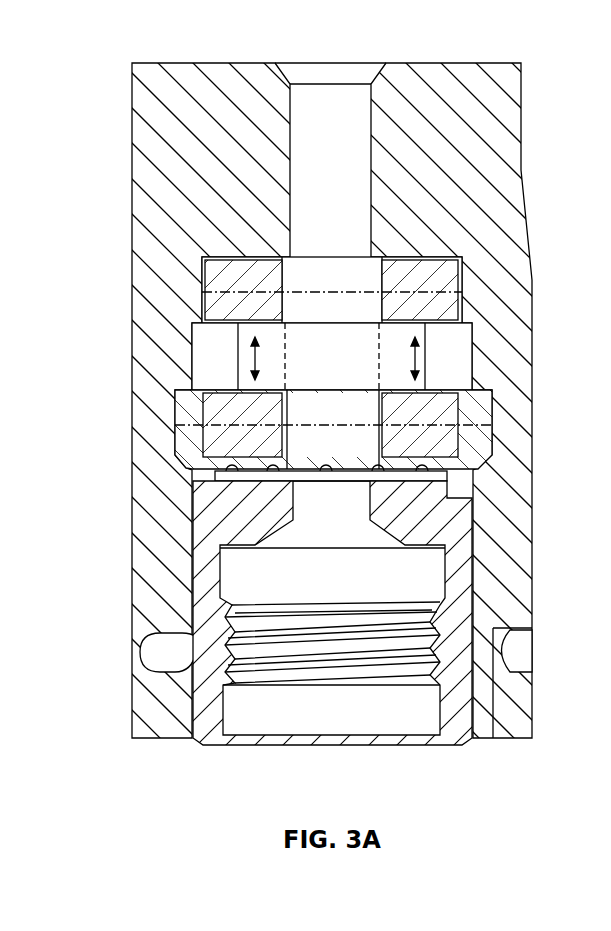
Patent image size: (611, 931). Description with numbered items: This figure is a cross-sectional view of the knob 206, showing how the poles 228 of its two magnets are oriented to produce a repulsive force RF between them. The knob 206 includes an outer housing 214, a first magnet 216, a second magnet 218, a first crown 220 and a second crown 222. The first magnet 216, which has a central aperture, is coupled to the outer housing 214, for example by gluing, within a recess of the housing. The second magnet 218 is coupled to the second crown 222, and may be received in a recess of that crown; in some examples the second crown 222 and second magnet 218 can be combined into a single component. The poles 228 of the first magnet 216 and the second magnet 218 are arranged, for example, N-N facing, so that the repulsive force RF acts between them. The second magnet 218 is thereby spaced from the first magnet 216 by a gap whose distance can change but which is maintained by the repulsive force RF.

The knob 206 is at (100, 47).
The outer housing 214 is at (137, 505).
The first magnet 216 is at (202, 300).
The second magnet 218 is at (445, 410).
The first crown 220 is at (455, 533).
The second crown 222 is at (478, 452).
The poles 228 is at (202, 266).
The repulsive force RF is at (415, 357).